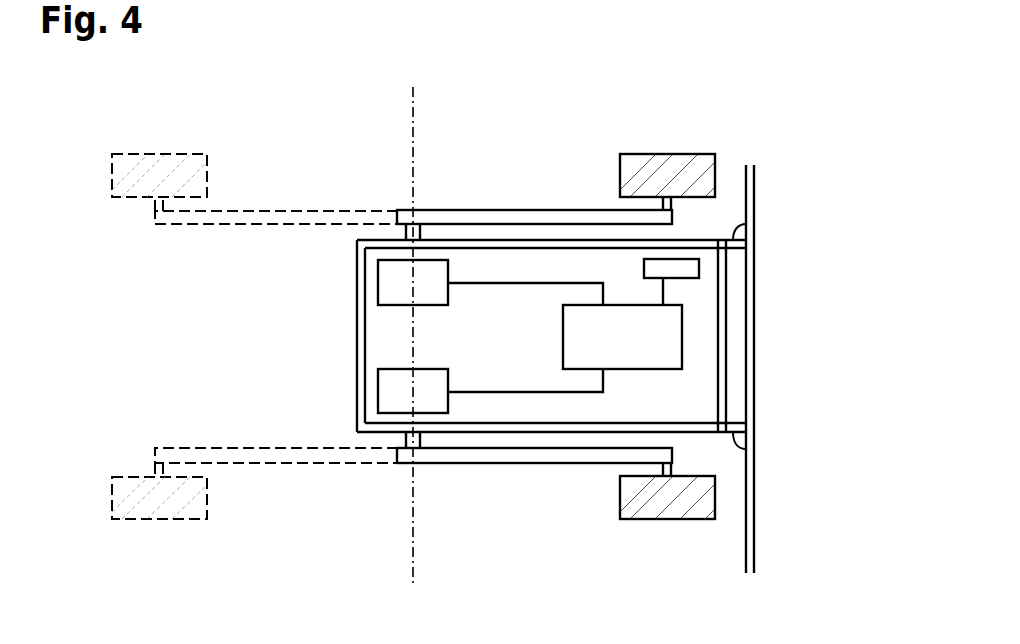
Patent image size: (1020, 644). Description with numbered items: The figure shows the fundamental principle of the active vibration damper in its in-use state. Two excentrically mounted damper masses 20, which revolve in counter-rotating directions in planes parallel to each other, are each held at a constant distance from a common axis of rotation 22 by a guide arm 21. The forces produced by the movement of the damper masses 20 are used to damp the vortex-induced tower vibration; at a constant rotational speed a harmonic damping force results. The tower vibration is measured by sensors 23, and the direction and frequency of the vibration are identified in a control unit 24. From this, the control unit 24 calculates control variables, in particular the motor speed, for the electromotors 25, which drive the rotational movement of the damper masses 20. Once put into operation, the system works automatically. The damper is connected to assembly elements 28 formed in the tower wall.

The damper masses 20 is at (685, 153).
The guide arm 21 is at (510, 210).
The axis of rotation 22 is at (412, 92).
The sensors 23 is at (699, 268).
The control unit 24 is at (682, 333).
The electromotors 25 is at (378, 280).
The assembly elements 28 is at (746, 224).